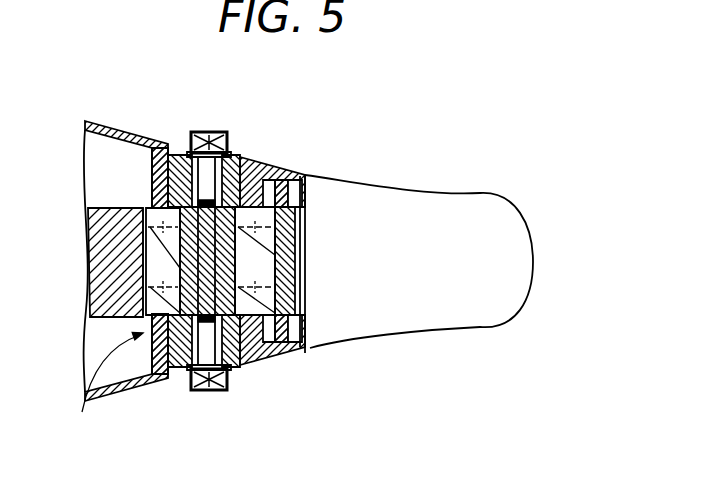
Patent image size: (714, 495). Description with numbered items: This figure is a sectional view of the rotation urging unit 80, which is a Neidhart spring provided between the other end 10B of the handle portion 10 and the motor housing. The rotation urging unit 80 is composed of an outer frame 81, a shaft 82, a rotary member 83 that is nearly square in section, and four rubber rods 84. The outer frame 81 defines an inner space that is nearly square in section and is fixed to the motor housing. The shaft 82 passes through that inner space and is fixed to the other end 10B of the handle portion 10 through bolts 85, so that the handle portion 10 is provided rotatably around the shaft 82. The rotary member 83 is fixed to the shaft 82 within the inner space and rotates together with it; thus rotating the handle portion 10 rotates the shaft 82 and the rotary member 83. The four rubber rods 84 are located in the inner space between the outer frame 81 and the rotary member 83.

The handle portion 10 is at (485, 265).
The other end 10B is at (243, 360).
The rotation urging unit 80 is at (93, 398).
The outer frame 81 is at (298, 347).
The shaft 82 is at (238, 160).
The rotary member 83 is at (163, 148).
The rubber rods 84 is at (146, 229).
The bolts 85 is at (208, 170).